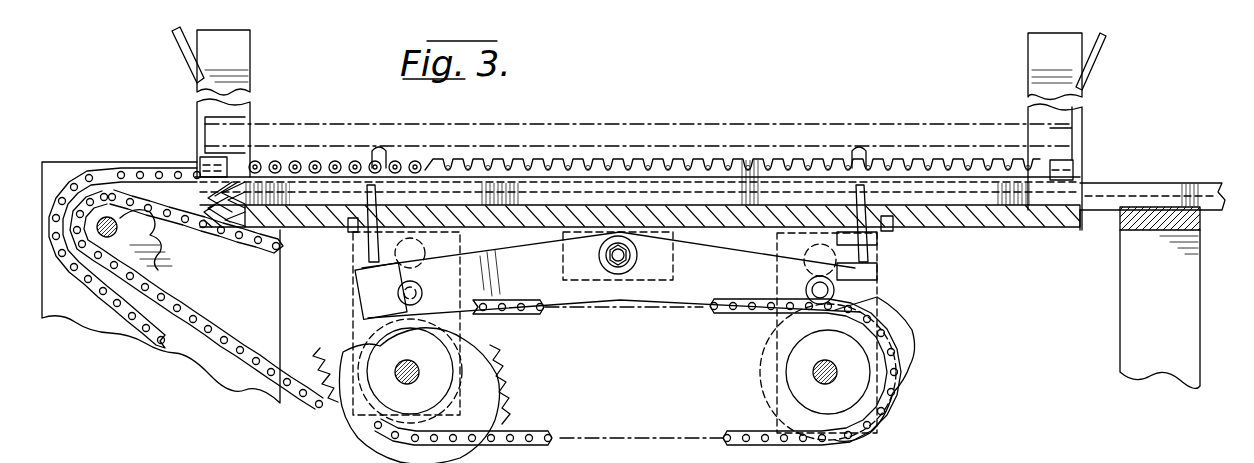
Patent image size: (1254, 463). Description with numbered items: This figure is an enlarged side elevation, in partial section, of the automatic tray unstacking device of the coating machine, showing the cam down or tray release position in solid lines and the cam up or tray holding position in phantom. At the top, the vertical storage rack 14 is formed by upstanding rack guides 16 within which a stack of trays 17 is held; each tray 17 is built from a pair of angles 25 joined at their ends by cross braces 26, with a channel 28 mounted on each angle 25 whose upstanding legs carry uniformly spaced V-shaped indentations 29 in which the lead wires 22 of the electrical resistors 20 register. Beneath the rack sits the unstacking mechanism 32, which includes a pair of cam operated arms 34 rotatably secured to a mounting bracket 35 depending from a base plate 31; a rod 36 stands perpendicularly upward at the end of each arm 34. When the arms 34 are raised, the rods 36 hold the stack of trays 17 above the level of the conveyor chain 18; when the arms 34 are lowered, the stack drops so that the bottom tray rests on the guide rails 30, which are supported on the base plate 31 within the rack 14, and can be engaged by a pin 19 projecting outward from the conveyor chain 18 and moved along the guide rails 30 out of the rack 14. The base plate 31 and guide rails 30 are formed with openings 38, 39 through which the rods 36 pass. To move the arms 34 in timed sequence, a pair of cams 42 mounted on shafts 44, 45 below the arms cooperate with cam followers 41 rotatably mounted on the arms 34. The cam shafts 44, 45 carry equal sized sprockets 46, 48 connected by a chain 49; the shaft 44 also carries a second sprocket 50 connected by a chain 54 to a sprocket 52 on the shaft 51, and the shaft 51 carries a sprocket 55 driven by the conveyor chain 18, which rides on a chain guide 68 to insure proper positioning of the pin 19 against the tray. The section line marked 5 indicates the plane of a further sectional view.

The section line 5 is at (719, 455).
The vertical storage rack 14 is at (832, 80).
The rack guides 16 is at (247, 72).
The trays 17 is at (583, 158).
The conveyor chain 18 is at (133, 167).
The pin 19 is at (200, 165).
The electrical resistors 20 is at (375, 160).
The lead wires 22 is at (710, 165).
The angles 25 is at (563, 182).
The cross braces 26 is at (219, 157).
The channel 28 is at (335, 160).
The V-shaped indentations 29 is at (275, 160).
The guide rails 30 is at (1160, 182).
The base plate 31 is at (1005, 228).
The unstacking mechanism 32 is at (933, 363).
The cam operated arms 34 is at (538, 282).
The mounting bracket 35 is at (583, 283).
The rod 36 is at (385, 150).
The openings 38 is at (352, 225).
The openings 39 is at (395, 188).
The cam followers 41 is at (395, 290).
The cams 42 is at (893, 337).
The shaft 44 is at (403, 384).
The shaft 45 is at (817, 370).
The sprocket 46 is at (330, 352).
The sprocket 48 is at (763, 412).
The chain 49 is at (520, 430).
The second sprocket 50 is at (500, 390).
The shaft 51 is at (107, 215).
The sprocket 52 is at (167, 253).
The chain 54 is at (227, 360).
The sprocket 55 is at (167, 270).
The chain guide 68 is at (203, 199).